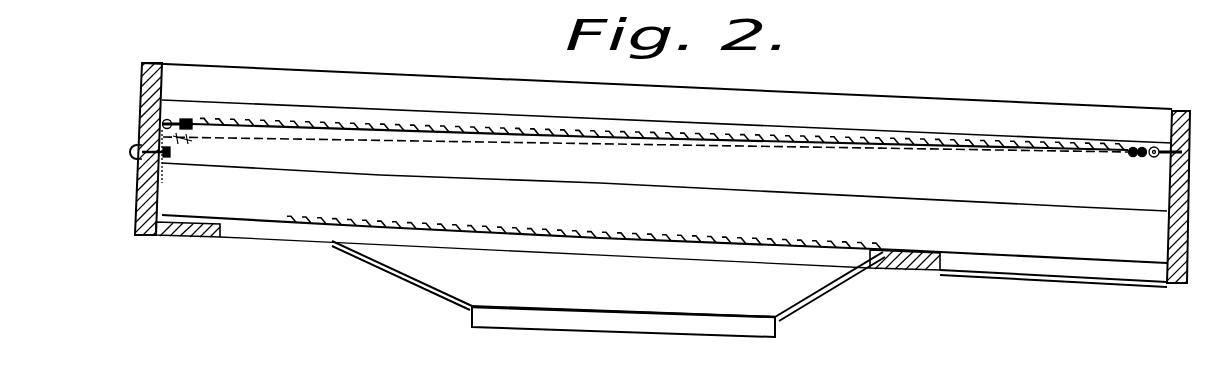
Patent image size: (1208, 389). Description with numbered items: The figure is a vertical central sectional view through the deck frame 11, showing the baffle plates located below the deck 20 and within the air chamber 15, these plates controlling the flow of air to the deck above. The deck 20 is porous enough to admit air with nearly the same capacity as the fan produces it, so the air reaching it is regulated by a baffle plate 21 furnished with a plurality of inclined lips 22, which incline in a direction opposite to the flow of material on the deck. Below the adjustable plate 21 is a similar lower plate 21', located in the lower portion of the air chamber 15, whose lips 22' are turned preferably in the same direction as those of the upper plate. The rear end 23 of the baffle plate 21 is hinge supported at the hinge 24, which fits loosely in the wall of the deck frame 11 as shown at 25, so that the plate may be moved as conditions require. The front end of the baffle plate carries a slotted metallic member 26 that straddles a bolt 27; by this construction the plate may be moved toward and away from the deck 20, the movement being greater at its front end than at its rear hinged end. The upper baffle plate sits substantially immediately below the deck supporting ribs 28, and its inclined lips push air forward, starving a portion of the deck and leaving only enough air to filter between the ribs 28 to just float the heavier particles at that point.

The deck frame 11 is at (150, 98).
The air chamber 15 is at (664, 181).
The deck 20 is at (447, 113).
The baffle plate 21 is at (660, 117).
The lower baffle plate 21' is at (664, 229).
The inclined lips 22 is at (662, 113).
The lips of the lower baffle 22' is at (584, 218).
The rear end of the baffle plate 23 is at (1059, 124).
The hinge 24 is at (1143, 157).
The loose hinge fitting in the frame wall 25 is at (1168, 155).
The slotted metallic member 26 is at (147, 133).
The bolt 27 is at (135, 157).
The deck supporting ribs 28 is at (565, 100).